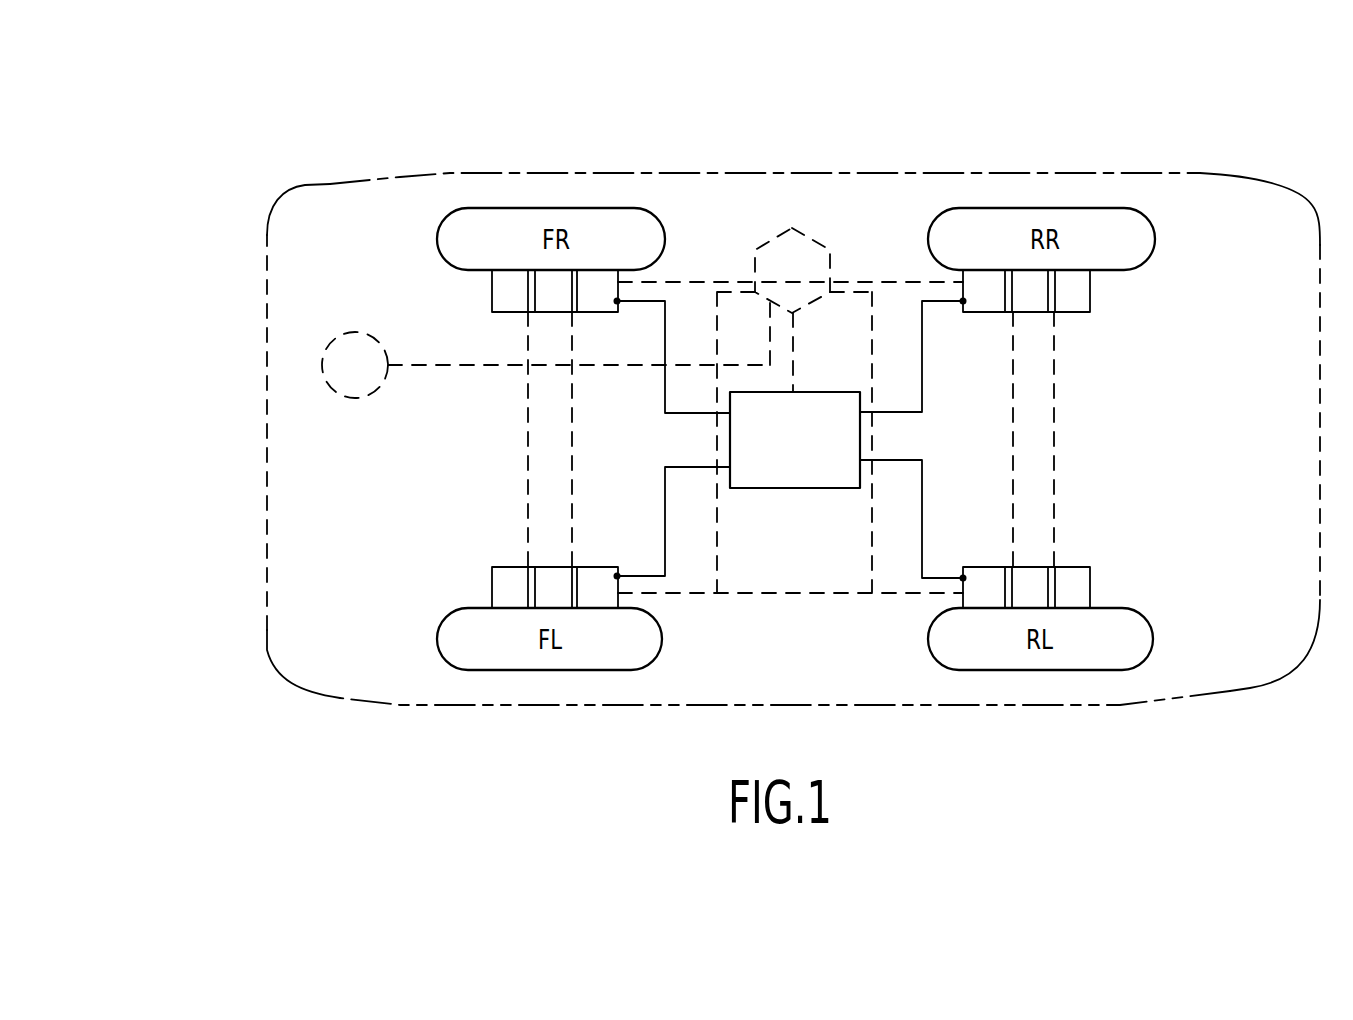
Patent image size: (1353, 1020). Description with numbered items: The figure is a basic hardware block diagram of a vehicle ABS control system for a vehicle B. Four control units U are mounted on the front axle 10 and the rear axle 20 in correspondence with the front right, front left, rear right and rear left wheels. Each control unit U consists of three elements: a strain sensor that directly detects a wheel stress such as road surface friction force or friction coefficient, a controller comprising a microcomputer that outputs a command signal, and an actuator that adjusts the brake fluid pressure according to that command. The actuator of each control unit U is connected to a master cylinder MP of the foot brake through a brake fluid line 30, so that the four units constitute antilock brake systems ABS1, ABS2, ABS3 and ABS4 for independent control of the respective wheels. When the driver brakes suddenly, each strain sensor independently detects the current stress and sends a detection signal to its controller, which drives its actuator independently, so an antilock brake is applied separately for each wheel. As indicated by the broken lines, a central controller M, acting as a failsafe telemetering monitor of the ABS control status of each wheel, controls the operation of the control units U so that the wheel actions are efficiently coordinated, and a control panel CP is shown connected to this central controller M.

The vehicle B is at (398, 177).
The antilock brake system ABS1 is at (475, 302).
The antilock brake system ABS2 is at (470, 587).
The antilock brake system ABS3 is at (1103, 300).
The antilock brake system ABS4 is at (1102, 582).
The front axle 10 is at (548, 442).
The rear axle 20 is at (1033, 466).
The brake fluid line 30 is at (648, 304).
The central controller M is at (825, 150).
The control panel CP is at (322, 365).
The master cylinder MP is at (807, 488).
The control unit U is at (585, 313).